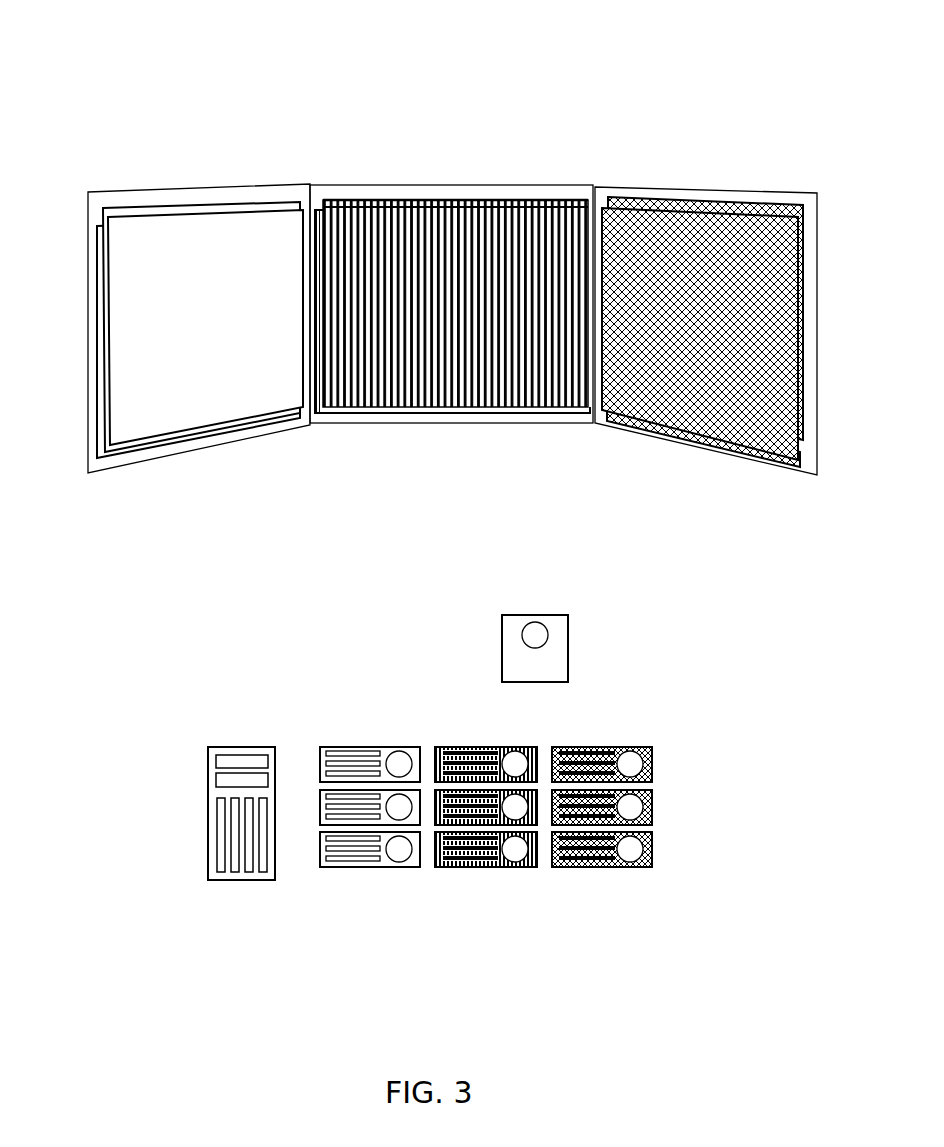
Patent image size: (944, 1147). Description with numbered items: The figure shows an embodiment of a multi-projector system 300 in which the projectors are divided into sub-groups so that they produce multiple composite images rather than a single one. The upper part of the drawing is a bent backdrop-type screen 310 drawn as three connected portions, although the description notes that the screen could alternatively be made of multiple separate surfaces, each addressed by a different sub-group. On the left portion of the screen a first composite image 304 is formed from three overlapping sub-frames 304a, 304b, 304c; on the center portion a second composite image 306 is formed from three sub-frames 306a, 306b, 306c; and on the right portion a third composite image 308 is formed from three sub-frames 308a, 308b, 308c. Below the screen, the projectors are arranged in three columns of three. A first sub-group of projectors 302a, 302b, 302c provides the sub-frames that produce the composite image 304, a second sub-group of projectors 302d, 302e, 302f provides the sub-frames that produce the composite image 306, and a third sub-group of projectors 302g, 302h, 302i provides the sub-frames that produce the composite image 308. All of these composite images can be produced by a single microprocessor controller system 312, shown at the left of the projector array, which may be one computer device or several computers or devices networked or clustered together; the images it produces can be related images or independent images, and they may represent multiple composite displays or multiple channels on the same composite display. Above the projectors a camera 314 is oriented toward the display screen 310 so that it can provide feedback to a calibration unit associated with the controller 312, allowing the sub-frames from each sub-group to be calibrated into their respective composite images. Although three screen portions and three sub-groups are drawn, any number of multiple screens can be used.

The multi-projector system 300 is at (325, 60).
The composite image 304 is at (225, 180).
The sub-frame 304a is at (158, 446).
The sub-frame 304b is at (140, 210).
The sub-frame 304c is at (262, 395).
The composite image 306 is at (446, 180).
The sub-frame 306a is at (350, 200).
The sub-frame 306b is at (523, 414).
The sub-frame 306c is at (463, 228).
The bent backdrop-type screen 310 is at (381, 424).
The composite image 308 is at (699, 180).
The sub-frame 308a is at (753, 208).
The sub-frame 308b is at (765, 455).
The sub-frame 308c is at (628, 227).
The microprocessor controller system 312 is at (214, 797).
The camera 314 is at (565, 657).
The projector 302a is at (337, 762).
The projector 302b is at (343, 803).
The projector 302c is at (385, 857).
The projector 302d is at (492, 752).
The projector 302e is at (467, 810).
The projector 302f is at (497, 866).
The projector 302g is at (652, 765).
The projector 302h is at (652, 806).
The projector 302i is at (652, 849).